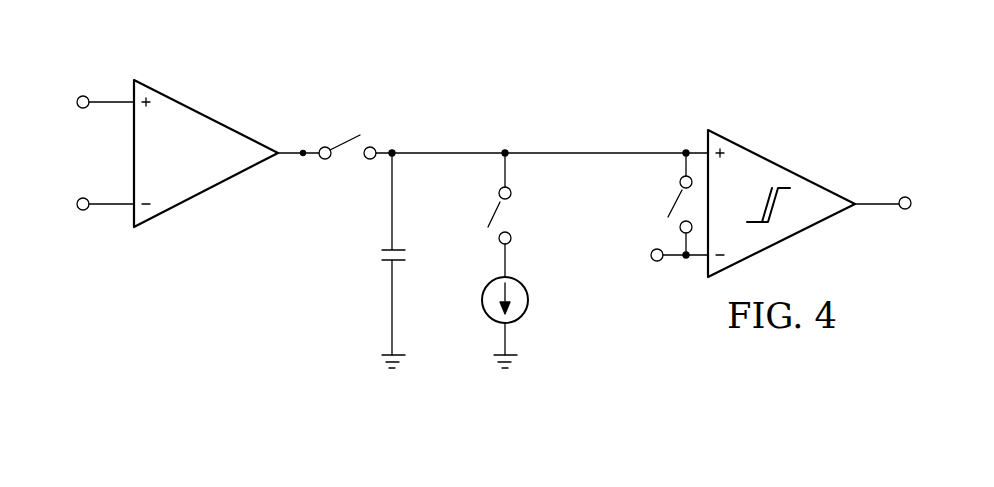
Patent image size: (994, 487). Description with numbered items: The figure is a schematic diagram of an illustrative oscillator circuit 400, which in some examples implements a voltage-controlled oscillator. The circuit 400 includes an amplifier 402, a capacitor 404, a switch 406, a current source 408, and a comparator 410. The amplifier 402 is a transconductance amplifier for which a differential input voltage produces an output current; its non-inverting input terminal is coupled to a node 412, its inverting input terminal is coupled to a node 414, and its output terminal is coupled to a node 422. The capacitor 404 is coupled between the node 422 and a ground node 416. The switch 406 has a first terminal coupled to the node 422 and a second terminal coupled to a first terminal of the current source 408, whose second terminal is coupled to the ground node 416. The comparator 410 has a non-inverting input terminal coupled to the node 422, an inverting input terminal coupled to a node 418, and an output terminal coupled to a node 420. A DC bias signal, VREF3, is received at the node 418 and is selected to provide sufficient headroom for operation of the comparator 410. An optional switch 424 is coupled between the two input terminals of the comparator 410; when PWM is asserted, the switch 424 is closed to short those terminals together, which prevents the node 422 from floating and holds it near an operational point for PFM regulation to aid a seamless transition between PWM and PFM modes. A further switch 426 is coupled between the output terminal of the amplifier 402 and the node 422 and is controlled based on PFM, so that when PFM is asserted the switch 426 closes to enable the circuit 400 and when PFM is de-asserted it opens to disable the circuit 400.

The oscillator circuit 400 is at (627, 57).
The amplifier 402 is at (208, 113).
The capacitor 404 is at (382, 252).
The switch 406 is at (498, 210).
The current source 408 is at (530, 298).
The comparator 410 is at (783, 167).
The node 412 is at (84, 95).
The node 414 is at (84, 212).
The ground node 416 is at (382, 365).
The node 418 is at (657, 263).
The node 420 is at (910, 197).
The node 422 is at (388, 156).
The switch 424 is at (677, 200).
The switch 426 is at (350, 140).